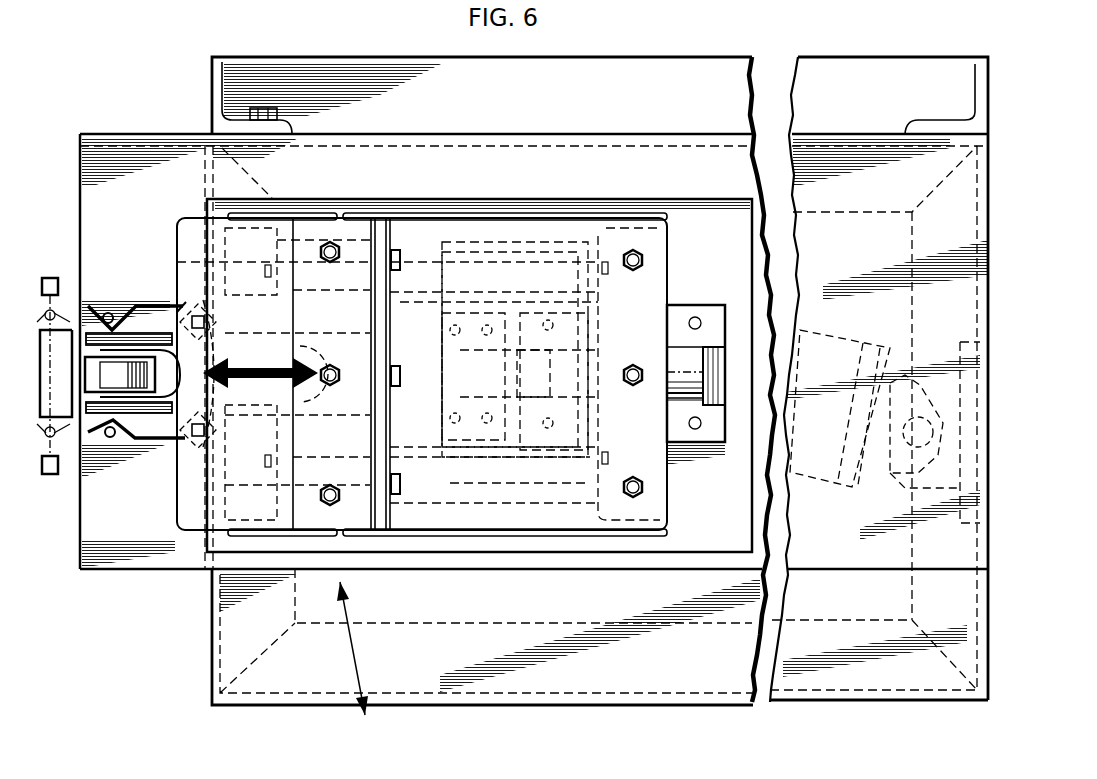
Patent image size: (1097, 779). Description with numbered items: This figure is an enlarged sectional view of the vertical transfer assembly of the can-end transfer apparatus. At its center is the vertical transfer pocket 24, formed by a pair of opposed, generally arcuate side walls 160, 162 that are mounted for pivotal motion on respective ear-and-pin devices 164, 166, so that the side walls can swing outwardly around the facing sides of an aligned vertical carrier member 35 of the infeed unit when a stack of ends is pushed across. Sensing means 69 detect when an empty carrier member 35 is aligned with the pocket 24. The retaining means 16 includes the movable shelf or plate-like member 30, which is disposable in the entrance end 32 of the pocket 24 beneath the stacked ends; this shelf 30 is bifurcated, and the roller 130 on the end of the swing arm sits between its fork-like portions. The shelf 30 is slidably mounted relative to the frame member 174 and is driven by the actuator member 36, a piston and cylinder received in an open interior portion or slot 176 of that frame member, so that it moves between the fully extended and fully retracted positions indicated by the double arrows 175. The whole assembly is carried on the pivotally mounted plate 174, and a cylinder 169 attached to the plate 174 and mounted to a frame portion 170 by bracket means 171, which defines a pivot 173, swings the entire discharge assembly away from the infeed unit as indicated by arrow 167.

The entrance end 32 is at (97, 138).
The sensing means 69 is at (50, 277).
The vertical pocket or carrier member 35 is at (60, 352).
The movable shelf or plate-like member 30 is at (120, 318).
The arcuate side wall 160 is at (160, 300).
The arcuate side wall 162 is at (197, 442).
The vertical transfer pocket 24 is at (135, 442).
The roller 130 is at (98, 383).
The ear-and-pin device 164 is at (232, 297).
The ear-and-pin device 166 is at (237, 474).
The double arrows 175 is at (284, 358).
The pivotally mounted plate 174 is at (683, 536).
The open interior portion or slot 176 is at (714, 306).
The retaining means 16 is at (677, 318).
The actuator means member 36 is at (688, 380).
The frame portion 170 is at (977, 282).
The bracket means 171 is at (935, 365).
The cylinder 169 is at (817, 472).
The pivot 173 is at (876, 451).
The arrow 167 is at (352, 648).